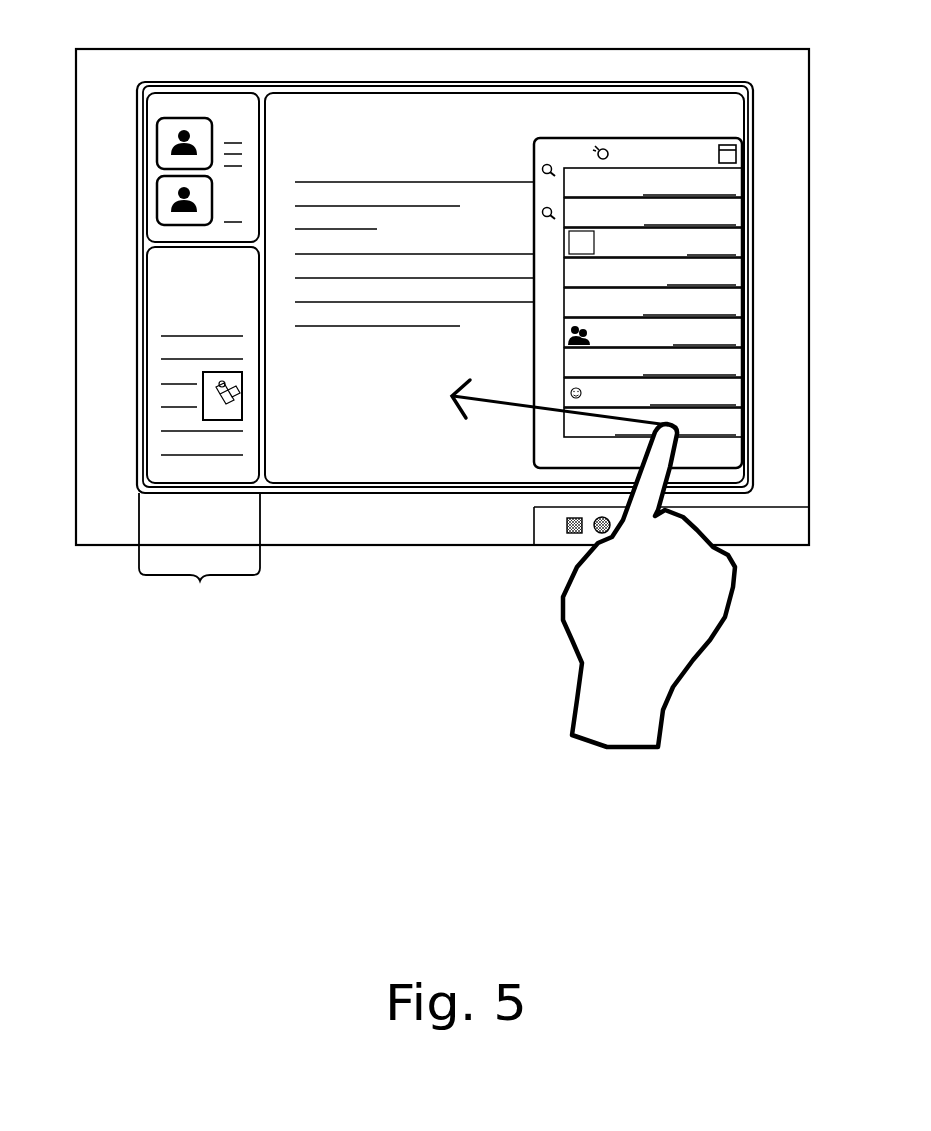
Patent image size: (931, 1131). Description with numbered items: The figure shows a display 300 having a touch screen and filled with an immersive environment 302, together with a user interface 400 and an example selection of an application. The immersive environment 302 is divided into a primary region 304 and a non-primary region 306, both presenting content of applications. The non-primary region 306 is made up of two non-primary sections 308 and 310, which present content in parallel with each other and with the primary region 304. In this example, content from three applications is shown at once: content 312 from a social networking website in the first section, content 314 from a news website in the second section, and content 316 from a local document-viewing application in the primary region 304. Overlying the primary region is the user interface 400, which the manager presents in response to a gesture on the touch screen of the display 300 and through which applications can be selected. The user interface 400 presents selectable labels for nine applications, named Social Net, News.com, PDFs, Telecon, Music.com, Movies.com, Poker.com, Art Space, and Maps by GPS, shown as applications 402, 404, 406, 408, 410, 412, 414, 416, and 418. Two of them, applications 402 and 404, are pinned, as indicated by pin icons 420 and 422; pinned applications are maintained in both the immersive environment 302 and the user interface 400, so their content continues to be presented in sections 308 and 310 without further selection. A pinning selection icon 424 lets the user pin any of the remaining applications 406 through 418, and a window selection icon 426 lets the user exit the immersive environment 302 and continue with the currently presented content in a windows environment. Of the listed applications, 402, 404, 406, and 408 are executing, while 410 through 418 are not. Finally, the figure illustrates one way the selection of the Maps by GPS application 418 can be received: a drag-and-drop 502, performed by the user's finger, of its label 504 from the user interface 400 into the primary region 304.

The display 300 is at (448, 49).
The immersive environment 302 is at (257, 86).
The primary region 304 is at (737, 116).
The non-primary region 306 is at (215, 609).
The non-primary section 308 is at (252, 118).
The non-primary section 310 is at (252, 271).
The content from a social networking website 312 is at (155, 117).
The content from a news website 314 is at (155, 274).
The content from a local document-viewing application 316 is at (347, 122).
The user interface 400 is at (568, 138).
The Social Net application 402 is at (747, 175).
The News.com application 404 is at (747, 205).
The PDFs application 406 is at (747, 235).
The Telecon application 408 is at (747, 265).
The Music.com application 410 is at (747, 295).
The Movies.com application 412 is at (747, 325).
The Poker.com application 414 is at (747, 355).
The Art Space application 416 is at (747, 385).
The Maps by GPS application 418 is at (747, 415).
The pin icon 420 is at (533, 164).
The pin icon 422 is at (533, 195).
The pinning selection icon 424 is at (607, 139).
The window selection icon 426 is at (741, 137).
The drag-and-drop 502 is at (516, 413).
The label 504 is at (609, 437).